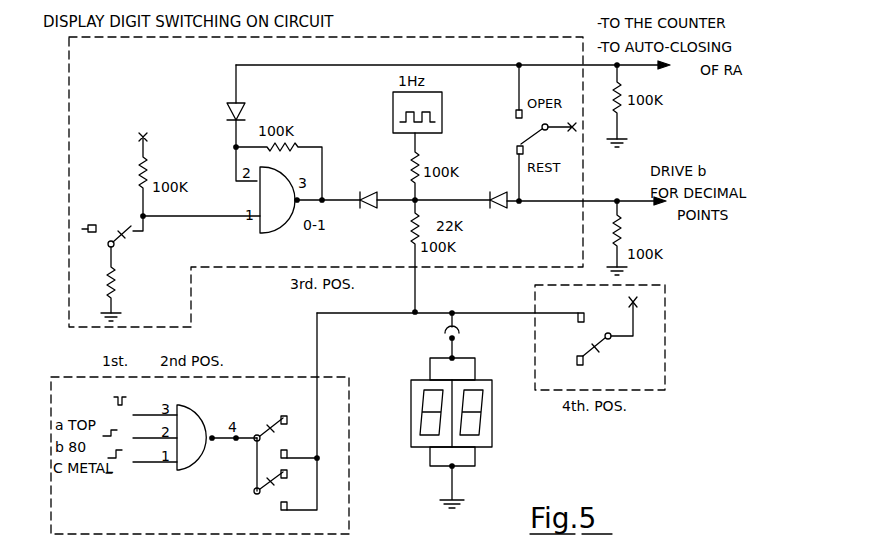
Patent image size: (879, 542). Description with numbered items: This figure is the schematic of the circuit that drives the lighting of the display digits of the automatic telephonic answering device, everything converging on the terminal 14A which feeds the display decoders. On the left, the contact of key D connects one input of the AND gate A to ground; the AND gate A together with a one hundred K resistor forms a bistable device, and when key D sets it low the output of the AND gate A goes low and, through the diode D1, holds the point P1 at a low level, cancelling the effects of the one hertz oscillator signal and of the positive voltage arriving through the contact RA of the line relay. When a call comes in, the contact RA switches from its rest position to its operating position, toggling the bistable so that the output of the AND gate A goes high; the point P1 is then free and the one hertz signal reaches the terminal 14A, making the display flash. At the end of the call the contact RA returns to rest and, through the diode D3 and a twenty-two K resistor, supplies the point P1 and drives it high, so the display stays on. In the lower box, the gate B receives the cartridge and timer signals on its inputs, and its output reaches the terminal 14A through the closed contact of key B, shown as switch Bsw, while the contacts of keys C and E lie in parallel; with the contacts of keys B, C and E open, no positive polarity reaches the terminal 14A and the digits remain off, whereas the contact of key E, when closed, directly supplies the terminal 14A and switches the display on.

The AND gate A is at (277, 200).
The gate B is at (169, 437).
The switch B Bsw is at (270, 420).
The key C contact C is at (268, 480).
The key D contact D is at (112, 268).
The key E contact E is at (607, 339).
The diode D1 is at (362, 192).
The diode D3 is at (500, 192).
The point P1 is at (406, 196).
The line relay contact RA is at (526, 133).
The terminal 14A is at (453, 409).